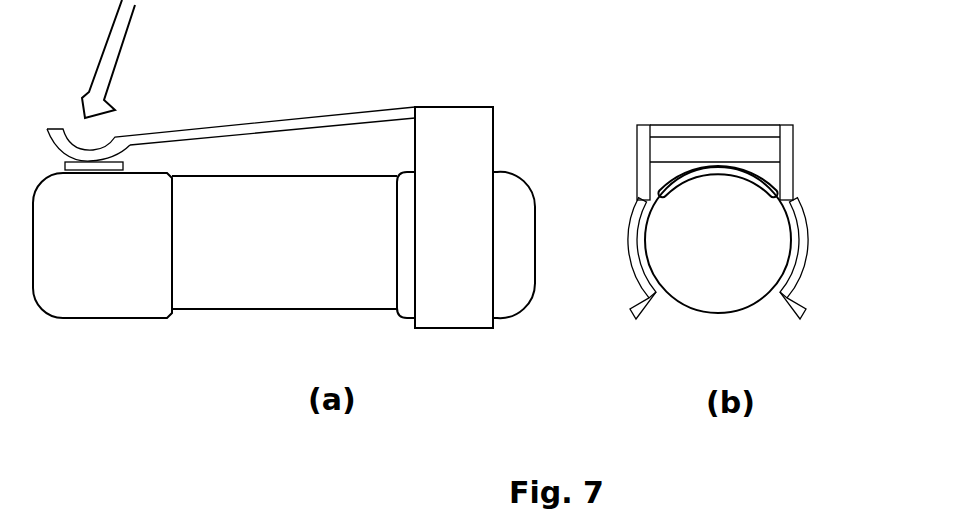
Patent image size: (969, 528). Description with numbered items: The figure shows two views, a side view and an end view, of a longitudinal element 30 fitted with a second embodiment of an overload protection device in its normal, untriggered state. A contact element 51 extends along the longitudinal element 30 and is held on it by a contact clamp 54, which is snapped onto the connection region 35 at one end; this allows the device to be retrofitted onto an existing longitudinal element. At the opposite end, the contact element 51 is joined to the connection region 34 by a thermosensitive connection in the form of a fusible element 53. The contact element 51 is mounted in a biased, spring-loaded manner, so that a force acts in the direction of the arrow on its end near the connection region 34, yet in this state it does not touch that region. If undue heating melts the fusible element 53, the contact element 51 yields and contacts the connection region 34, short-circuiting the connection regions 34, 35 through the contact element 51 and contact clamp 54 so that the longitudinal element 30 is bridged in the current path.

The longitudinal element 30 is at (273, 283).
The connection region 34 is at (92, 302).
The connection region 35 is at (512, 302).
The contact element 51 is at (318, 115).
The fusible element 53 is at (126, 168).
The contact clamp 54 is at (472, 125).